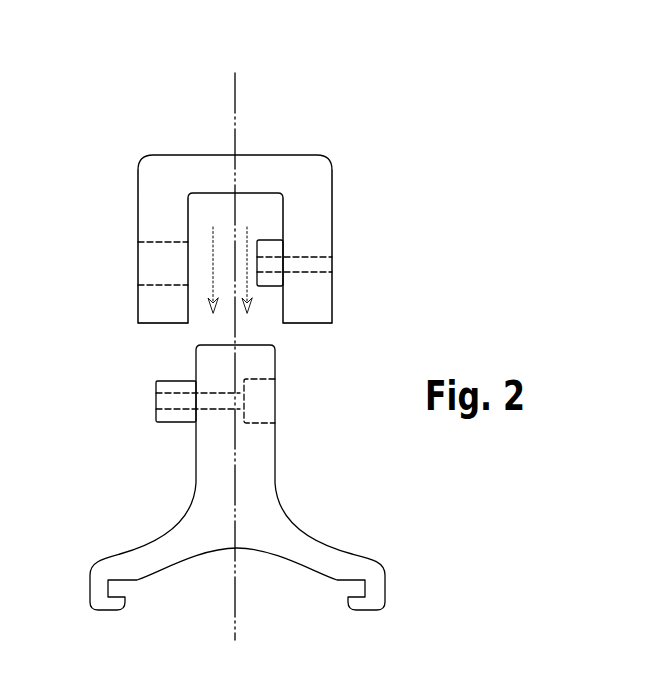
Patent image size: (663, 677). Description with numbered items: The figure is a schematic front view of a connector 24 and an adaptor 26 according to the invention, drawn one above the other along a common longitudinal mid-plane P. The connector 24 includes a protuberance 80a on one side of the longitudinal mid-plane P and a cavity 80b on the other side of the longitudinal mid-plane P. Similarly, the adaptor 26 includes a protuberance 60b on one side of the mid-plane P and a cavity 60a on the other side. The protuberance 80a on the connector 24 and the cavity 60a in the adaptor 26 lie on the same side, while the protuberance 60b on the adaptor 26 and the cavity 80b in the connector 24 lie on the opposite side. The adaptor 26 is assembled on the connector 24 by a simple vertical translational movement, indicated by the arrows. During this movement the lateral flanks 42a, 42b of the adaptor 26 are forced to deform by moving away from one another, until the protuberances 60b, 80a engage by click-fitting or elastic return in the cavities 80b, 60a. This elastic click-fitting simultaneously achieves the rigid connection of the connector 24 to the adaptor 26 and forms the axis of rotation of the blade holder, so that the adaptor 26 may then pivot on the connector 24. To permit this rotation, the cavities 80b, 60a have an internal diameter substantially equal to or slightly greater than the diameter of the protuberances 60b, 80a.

The longitudinal mid-plane P is at (236, 93).
The adaptor 26 is at (302, 144).
The connector 24 is at (354, 535).
The lateral flank 42a is at (138, 307).
The lateral flank 42b is at (332, 288).
The cavity 60a is at (162, 263).
The protuberance 60b is at (264, 287).
The protuberance 80a is at (172, 423).
The cavity 80b is at (260, 400).